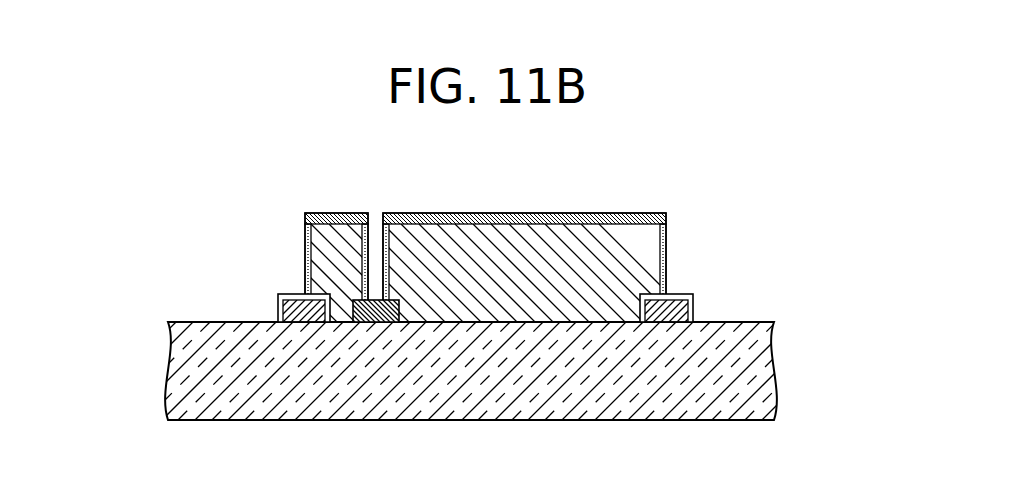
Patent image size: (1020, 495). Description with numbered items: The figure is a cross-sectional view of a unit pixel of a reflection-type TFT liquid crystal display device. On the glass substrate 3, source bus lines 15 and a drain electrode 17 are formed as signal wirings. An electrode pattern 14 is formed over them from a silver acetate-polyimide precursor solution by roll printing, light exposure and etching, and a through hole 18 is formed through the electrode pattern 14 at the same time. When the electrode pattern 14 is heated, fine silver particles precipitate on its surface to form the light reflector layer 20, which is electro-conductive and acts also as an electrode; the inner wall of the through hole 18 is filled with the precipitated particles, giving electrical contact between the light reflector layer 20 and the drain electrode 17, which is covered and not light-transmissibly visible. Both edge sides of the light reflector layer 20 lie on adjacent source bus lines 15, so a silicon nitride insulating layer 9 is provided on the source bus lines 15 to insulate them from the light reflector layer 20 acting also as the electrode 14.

The glass substrate 3 is at (600, 393).
The insulating layer 9 is at (302, 294).
The electrode pattern 14 is at (312, 238).
The source bus line 15 is at (280, 302).
The drain electrode 17 is at (380, 322).
The through hole 18 is at (373, 232).
The light reflector layer 20 is at (563, 213).